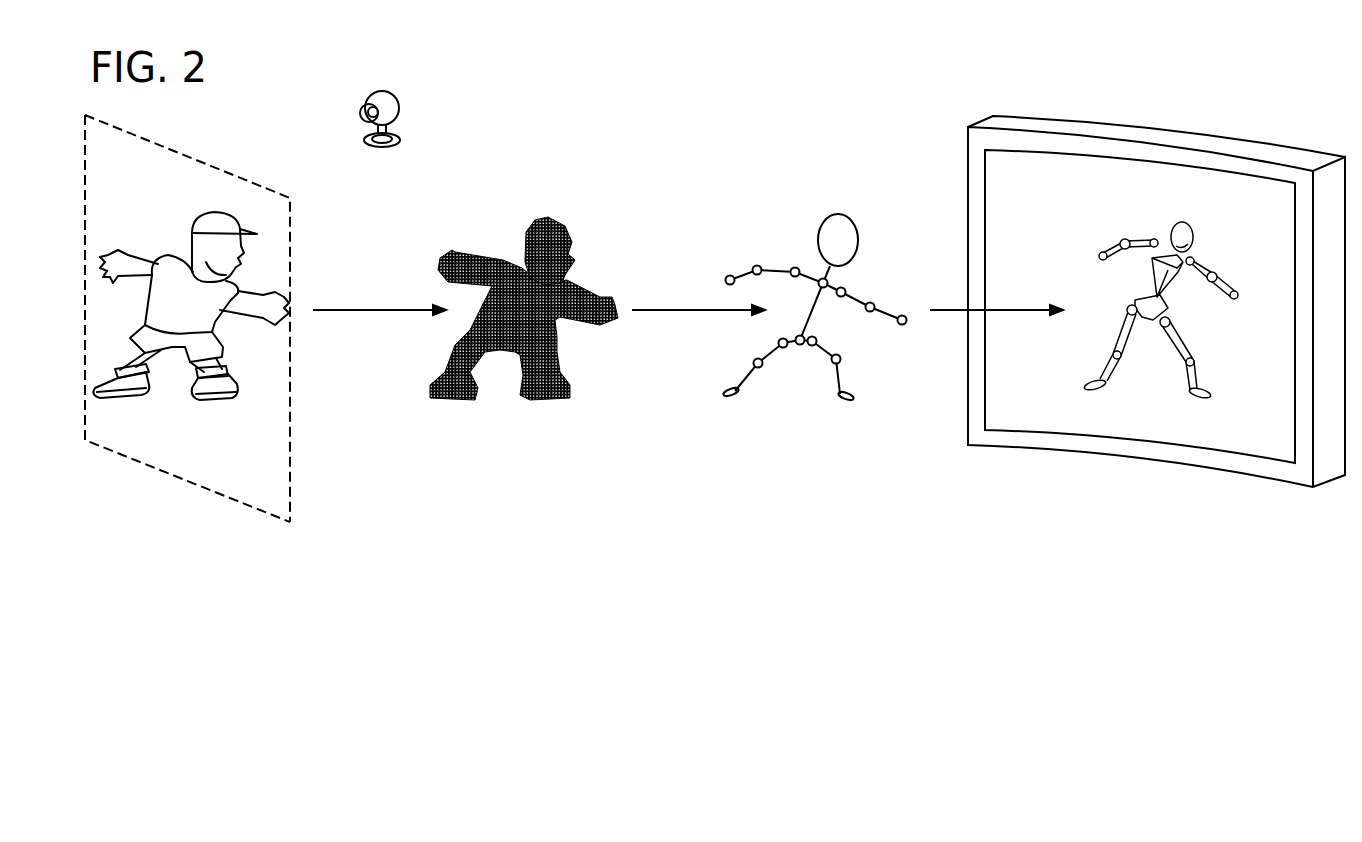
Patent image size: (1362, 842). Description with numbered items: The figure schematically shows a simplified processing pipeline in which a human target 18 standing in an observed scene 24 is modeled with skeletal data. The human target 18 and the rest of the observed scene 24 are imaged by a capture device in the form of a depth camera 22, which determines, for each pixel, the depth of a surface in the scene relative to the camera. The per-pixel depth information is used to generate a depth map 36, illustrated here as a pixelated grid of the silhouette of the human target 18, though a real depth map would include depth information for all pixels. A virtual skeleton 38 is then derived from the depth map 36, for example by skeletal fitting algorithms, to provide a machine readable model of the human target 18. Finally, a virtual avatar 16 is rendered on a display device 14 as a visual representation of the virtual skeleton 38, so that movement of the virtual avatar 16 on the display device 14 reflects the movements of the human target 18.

The display device 14 is at (1272, 366).
The virtual avatar 16 is at (1178, 222).
The human target 18 is at (199, 318).
The depth camera 22 is at (400, 98).
The observed scene 24 is at (137, 181).
The depth map 36 is at (548, 217).
The virtual skeleton 38 is at (851, 251).